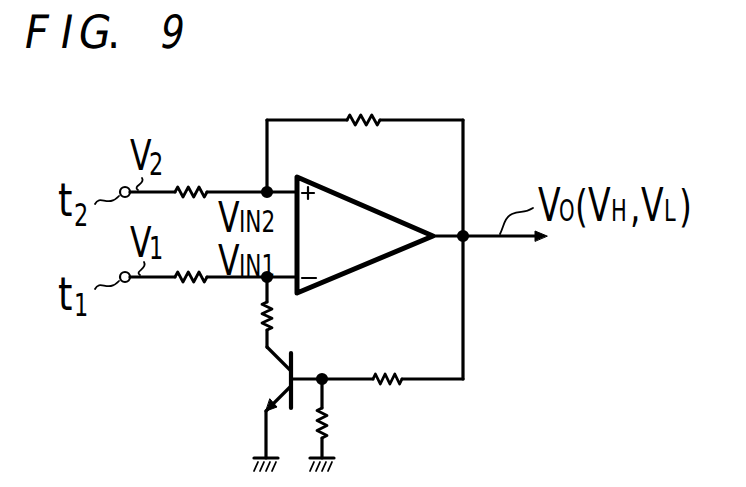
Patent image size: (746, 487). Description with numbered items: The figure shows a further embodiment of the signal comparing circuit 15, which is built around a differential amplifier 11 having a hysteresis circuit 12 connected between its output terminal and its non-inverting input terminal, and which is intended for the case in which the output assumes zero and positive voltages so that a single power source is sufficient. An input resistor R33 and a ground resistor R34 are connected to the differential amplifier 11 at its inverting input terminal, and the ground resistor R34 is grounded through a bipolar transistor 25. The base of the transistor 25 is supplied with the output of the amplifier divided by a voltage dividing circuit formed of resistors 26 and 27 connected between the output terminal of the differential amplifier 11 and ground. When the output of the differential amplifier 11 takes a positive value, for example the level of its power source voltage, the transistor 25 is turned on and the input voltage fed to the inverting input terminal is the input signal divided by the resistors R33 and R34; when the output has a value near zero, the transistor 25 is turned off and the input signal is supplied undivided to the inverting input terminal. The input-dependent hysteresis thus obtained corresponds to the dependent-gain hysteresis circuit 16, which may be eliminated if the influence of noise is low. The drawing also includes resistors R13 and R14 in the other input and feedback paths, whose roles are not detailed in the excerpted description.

The differential amplifier 11 is at (380, 265).
The hysteresis circuit 12 is at (464, 333).
The signal comparing circuit 15 is at (272, 92).
The dependent-gain hysteresis circuit 16 is at (464, 153).
The bipolar transistor 25 is at (281, 370).
The resistor 26 is at (403, 385).
The resistor 27 is at (326, 424).
The input resistor R13 is at (202, 189).
The feedback resistor R14 is at (382, 116).
The input resistor R33 is at (198, 282).
The ground resistor R34 is at (272, 315).